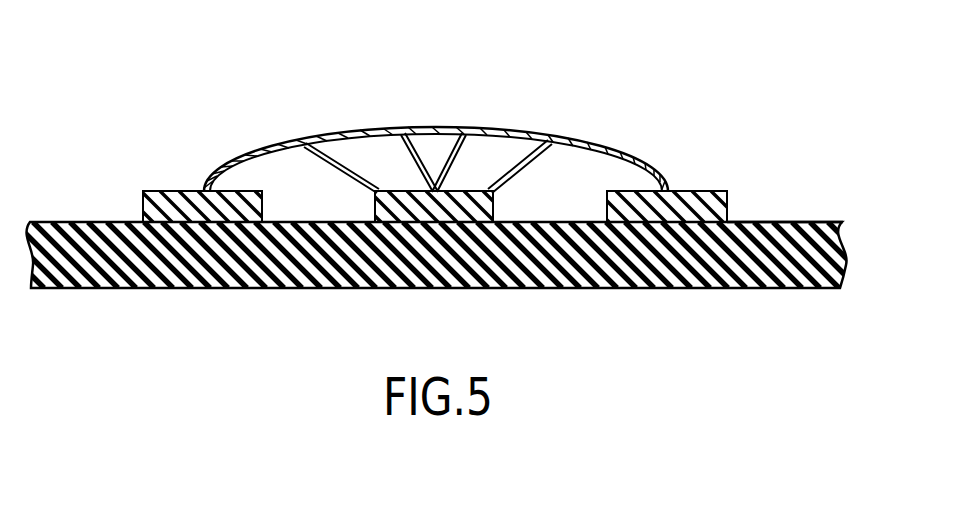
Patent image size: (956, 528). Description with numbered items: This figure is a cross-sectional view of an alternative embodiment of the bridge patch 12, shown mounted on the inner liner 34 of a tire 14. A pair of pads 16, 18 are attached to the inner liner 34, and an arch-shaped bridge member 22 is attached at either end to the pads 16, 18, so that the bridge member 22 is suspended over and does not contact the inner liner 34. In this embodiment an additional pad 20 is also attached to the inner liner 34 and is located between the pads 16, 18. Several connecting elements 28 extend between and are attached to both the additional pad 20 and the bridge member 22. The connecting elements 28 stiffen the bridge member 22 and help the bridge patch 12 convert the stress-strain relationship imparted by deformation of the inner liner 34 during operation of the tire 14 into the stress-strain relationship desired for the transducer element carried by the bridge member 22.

The bridge patch 12 is at (636, 101).
The tire 14 is at (763, 275).
The pad 16 is at (170, 191).
The pad 18 is at (700, 191).
The additional pad 20 is at (422, 213).
The bridge member 22 is at (263, 149).
The connecting elements 28 is at (417, 163).
The inner liner 34 is at (791, 214).